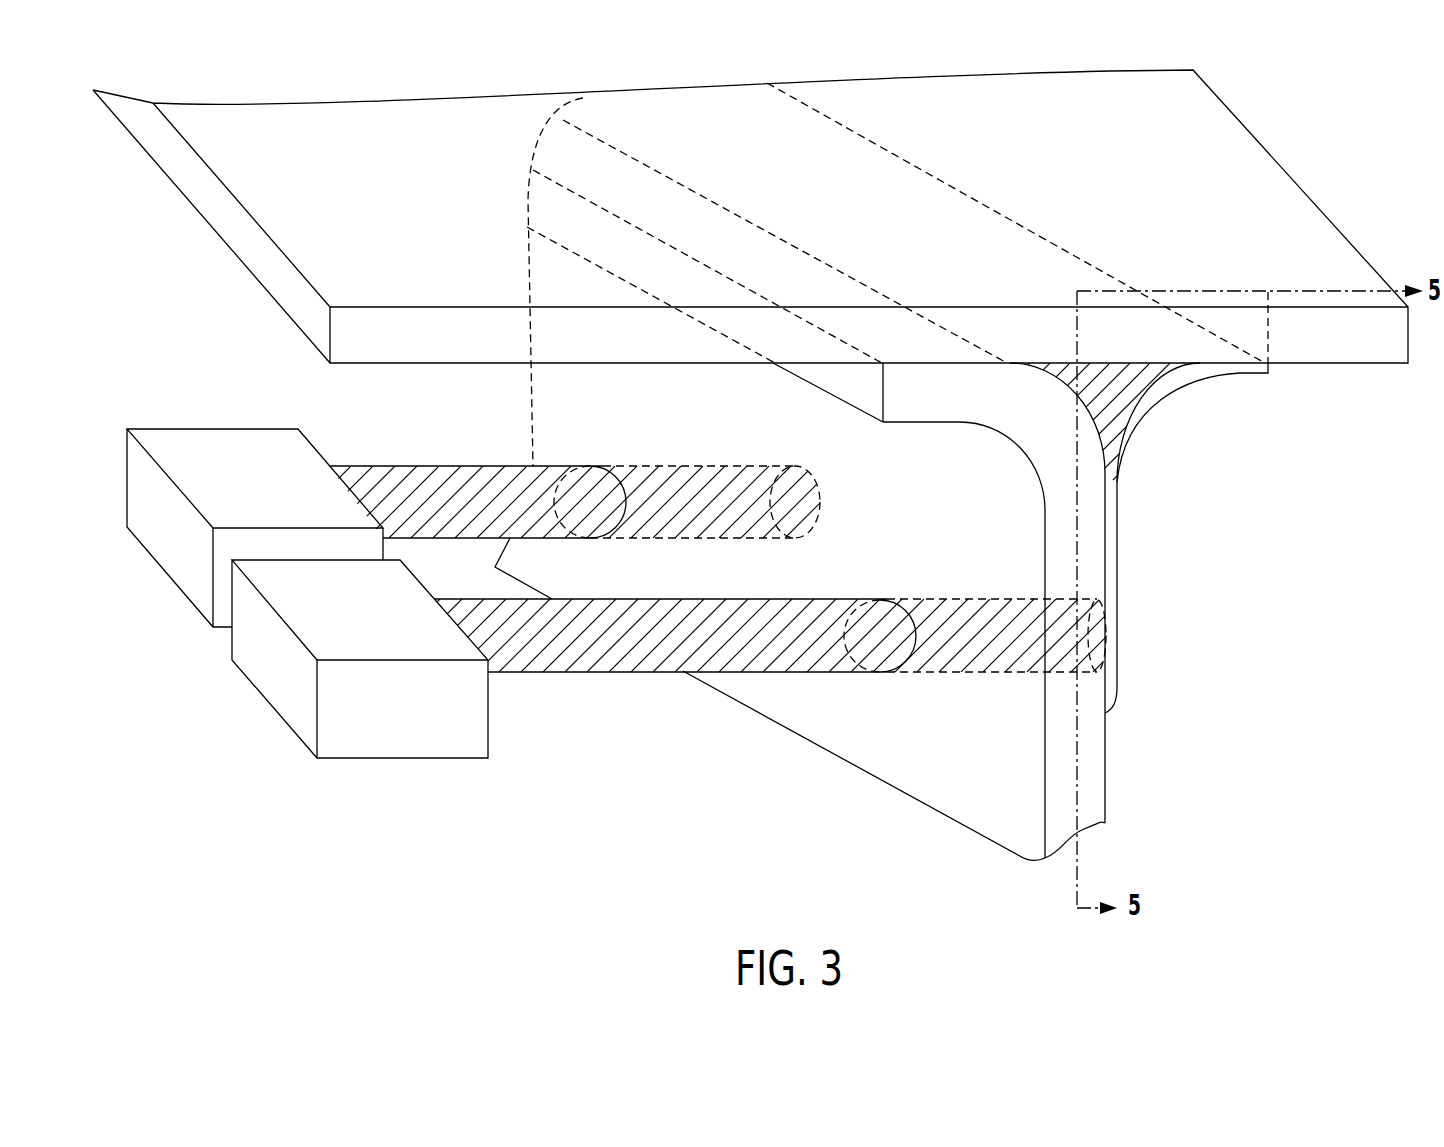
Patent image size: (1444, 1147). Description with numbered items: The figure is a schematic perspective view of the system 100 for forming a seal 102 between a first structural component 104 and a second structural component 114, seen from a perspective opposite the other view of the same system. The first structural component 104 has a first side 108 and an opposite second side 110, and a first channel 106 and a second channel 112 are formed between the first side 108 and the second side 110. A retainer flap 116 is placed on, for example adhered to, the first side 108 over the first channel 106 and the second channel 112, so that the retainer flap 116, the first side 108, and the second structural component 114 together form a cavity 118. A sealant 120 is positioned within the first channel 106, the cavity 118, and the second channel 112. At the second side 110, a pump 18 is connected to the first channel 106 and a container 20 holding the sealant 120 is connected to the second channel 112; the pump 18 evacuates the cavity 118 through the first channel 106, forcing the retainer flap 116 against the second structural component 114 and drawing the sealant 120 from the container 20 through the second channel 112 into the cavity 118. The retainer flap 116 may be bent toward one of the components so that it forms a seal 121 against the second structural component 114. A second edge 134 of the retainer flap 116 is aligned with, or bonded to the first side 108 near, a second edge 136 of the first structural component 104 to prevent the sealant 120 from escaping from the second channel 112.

The pump 18 is at (223, 438).
The container 20 is at (415, 740).
The system 100 is at (750, 489).
The seal 102 is at (1014, 388).
The first structural component 104 is at (1057, 780).
The first channel 106 is at (648, 450).
The first side 108 is at (1140, 740).
The second side 110 is at (838, 730).
The second channel 112 is at (970, 690).
The second structural component 114 is at (1353, 347).
The retainer flap 116 is at (1240, 377).
The cavity 118 is at (1128, 341).
The sealant 120 is at (1119, 398).
The seal 121 is at (1202, 363).
The second edge of the retainer flap 134 is at (1113, 637).
The second edge of the first structural component 136 is at (1108, 793).